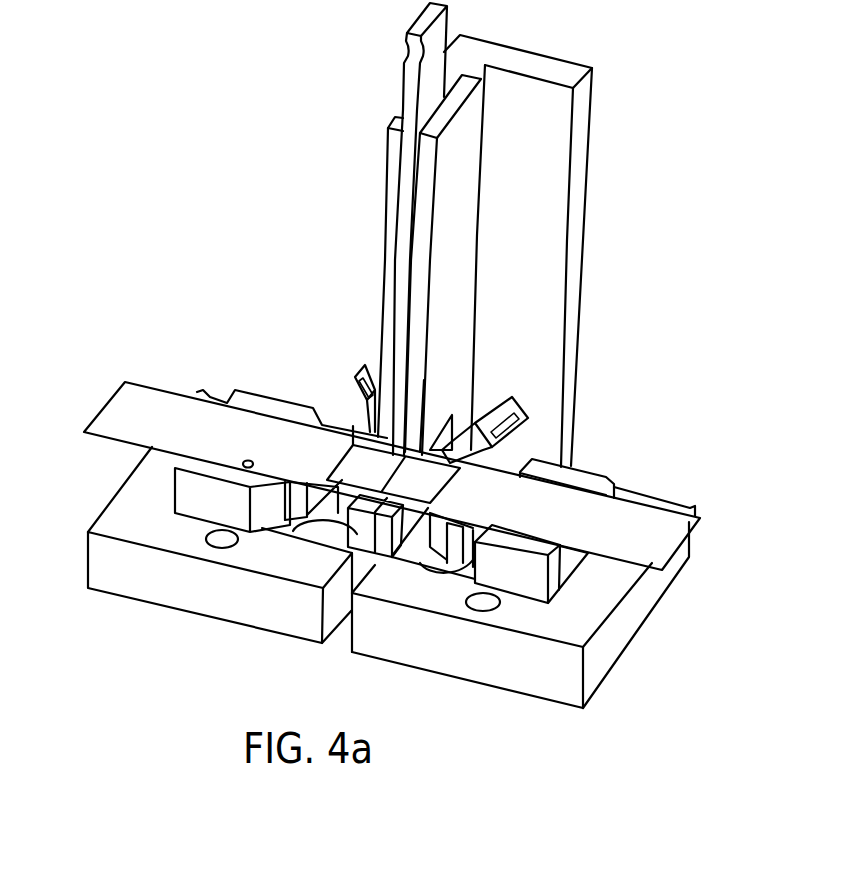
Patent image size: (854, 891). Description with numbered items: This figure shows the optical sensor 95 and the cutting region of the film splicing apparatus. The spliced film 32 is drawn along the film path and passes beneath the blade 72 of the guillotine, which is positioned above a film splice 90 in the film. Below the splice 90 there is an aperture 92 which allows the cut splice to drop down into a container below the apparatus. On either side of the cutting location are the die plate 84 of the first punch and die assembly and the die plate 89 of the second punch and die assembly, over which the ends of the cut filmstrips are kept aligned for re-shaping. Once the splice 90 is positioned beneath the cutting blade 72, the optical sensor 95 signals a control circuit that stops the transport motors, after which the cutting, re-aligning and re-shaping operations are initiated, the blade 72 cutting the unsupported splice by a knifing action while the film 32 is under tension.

The spliced film 32 is at (168, 402).
The blade 72 is at (400, 262).
The die plate 84 is at (185, 492).
The die plate 89 is at (575, 480).
The film splice 90 is at (362, 462).
The aperture 92 is at (412, 552).
The optical sensor 95 is at (355, 370).